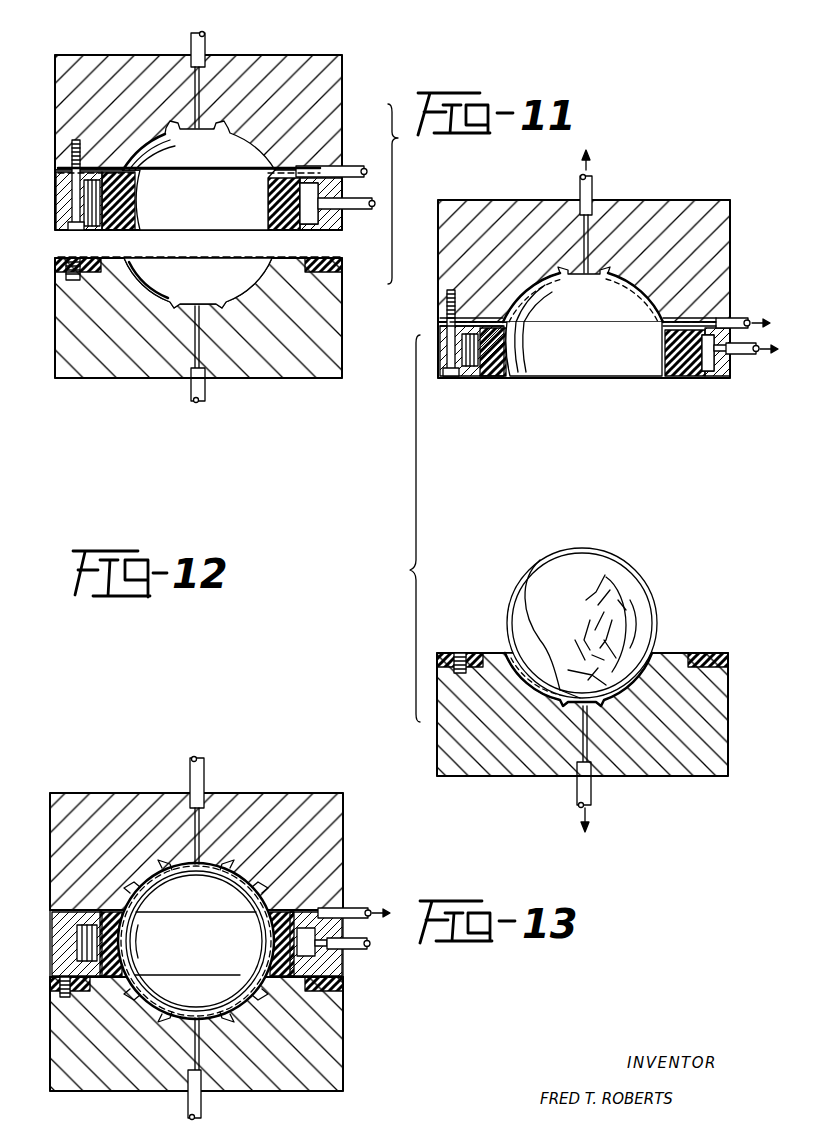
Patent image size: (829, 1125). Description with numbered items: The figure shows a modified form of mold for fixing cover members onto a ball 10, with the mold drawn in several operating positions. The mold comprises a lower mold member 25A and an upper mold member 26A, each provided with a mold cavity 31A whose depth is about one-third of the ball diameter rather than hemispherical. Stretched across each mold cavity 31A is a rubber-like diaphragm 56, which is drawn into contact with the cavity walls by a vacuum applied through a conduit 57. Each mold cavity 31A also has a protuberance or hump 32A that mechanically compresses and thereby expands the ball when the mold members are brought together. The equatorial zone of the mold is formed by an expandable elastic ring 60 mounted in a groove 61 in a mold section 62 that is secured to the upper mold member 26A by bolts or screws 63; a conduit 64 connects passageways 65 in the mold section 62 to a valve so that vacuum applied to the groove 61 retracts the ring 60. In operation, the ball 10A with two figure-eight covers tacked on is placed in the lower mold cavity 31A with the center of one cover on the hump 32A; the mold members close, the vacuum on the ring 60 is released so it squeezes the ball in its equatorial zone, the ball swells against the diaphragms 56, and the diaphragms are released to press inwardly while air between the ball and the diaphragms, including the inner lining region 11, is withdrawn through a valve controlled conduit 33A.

In FIG. 12, the ball 10 is at (590, 556).
In FIG. 13, the ball 10 is at (138, 918).
In FIG. 12, the ball having two figure-eight covers tacked thereto 10A is at (606, 590).
In FIG. 12, the inner lining 11 is at (640, 590).
In FIG. 13, the inner lining 11 is at (146, 897).
In FIG. 11, the lower mold member 25A is at (260, 383).
In FIG. 12, the lower mold member 25A is at (730, 714).
In FIG. 13, the lower mold member 25A is at (345, 1044).
In FIG. 11, the upper mold member 26A is at (328, 66).
In FIG. 12, the upper mold member 26A is at (722, 195).
In FIG. 13, the upper mold member 26A is at (330, 780).
In FIG. 11, the mold cavity 31A is at (199, 214).
In FIG. 12, the mold cavity 31A is at (545, 352).
In FIG. 11, the protuberance or hump 32A is at (214, 126).
In FIG. 12, the protuberance or hump 32A is at (572, 282).
In FIG. 11, the valve controlled conduit 33A is at (360, 160).
In FIG. 12, the valve controlled conduit 33A is at (740, 318).
In FIG. 13, the valve controlled conduit 33A is at (362, 906).
In FIG. 11, the rubber-like diaphragm 56 is at (209, 178).
In FIG. 12, the rubber-like diaphragm 56 is at (640, 282).
In FIG. 13, the rubber-like diaphragm 56 is at (240, 880).
In FIG. 11, the conduit 57 is at (190, 38).
In FIG. 12, the conduit 57 is at (594, 190).
In FIG. 13, the conduit 57 is at (205, 772).
In FIG. 11, the expandable elastic ring 60 is at (153, 203).
In FIG. 12, the expandable elastic ring 60 is at (682, 378).
In FIG. 13, the expandable elastic ring 60 is at (300, 965).
In FIG. 11, the groove 61 is at (86, 207).
In FIG. 12, the groove 61 is at (707, 378).
In FIG. 13, the groove 61 is at (310, 952).
In FIG. 11, the mold section 62 is at (56, 190).
In FIG. 12, the mold section 62 is at (487, 378).
In FIG. 13, the mold section 62 is at (345, 933).
In FIG. 11, the bolts or screws 63 is at (70, 159).
In FIG. 12, the bolts or screws 63 is at (452, 378).
In FIG. 13, the bolts or screws 63 is at (65, 987).
In FIG. 11, the conduit 64 is at (350, 205).
In FIG. 12, the conduit 64 is at (742, 360).
In FIG. 13, the conduit 64 is at (368, 948).
In FIG. 12, the passage 65 is at (728, 378).